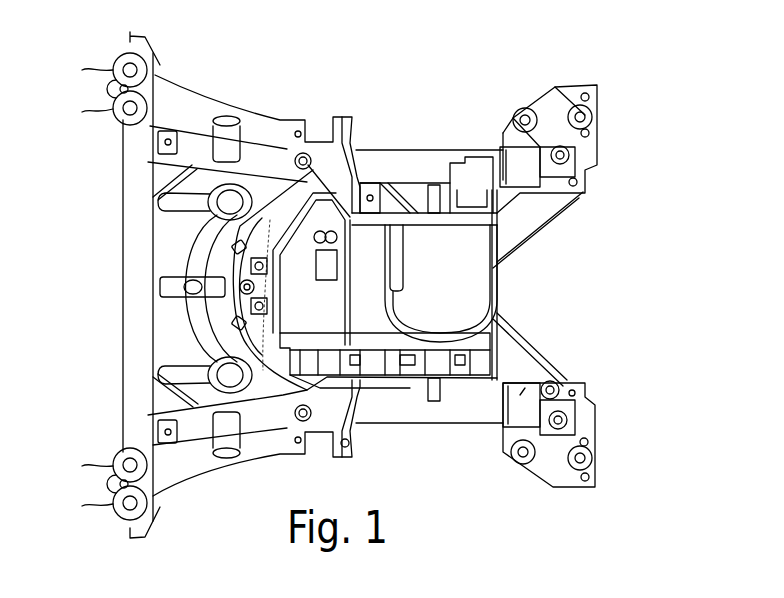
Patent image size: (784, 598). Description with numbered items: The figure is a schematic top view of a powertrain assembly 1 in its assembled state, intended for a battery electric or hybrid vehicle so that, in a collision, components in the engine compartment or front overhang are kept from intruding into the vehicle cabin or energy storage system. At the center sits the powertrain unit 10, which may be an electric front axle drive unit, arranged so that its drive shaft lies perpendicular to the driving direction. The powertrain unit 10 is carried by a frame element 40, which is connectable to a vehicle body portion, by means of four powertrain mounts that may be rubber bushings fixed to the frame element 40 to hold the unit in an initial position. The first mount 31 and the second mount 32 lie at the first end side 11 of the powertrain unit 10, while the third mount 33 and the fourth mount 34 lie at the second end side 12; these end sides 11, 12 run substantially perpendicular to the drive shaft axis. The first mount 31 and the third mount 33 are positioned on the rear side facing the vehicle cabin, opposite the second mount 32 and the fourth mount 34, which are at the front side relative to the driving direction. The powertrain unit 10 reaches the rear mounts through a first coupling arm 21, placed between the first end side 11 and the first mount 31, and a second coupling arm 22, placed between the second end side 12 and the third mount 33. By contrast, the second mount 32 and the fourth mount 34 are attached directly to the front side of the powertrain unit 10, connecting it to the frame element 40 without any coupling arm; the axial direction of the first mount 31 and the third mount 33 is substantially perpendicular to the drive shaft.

The powertrain assembly 1 is at (649, 207).
The powertrain unit 10 is at (371, 243).
The first end side 11 is at (420, 395).
The second end side 12 is at (448, 190).
The first coupling arm 21 is at (513, 383).
The second coupling arm 22 is at (474, 175).
The first mount 31 is at (556, 392).
The second mount 32 is at (263, 370).
The third mount 33 is at (530, 165).
The fourth mount 34 is at (270, 220).
The frame element 40 is at (131, 332).